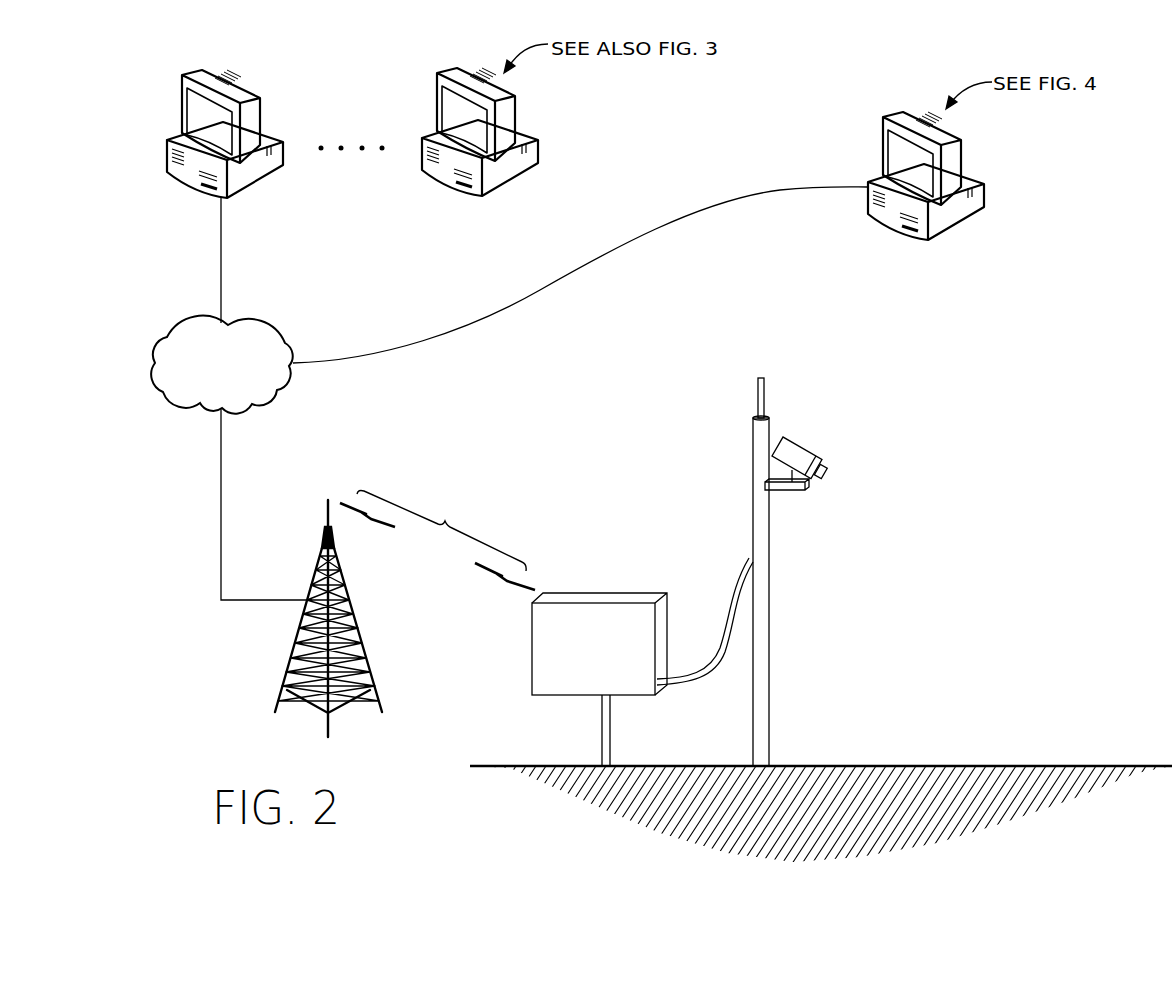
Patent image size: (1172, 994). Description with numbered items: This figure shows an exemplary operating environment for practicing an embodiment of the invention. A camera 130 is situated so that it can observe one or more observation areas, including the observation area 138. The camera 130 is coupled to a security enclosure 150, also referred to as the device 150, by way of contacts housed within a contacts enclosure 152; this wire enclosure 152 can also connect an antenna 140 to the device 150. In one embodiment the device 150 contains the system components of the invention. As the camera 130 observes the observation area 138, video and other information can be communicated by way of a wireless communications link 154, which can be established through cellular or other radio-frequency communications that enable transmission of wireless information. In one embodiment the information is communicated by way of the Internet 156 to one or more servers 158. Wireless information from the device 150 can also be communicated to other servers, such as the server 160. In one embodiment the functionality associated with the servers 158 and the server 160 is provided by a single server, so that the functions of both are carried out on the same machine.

The camera 130 is at (808, 441).
The observation area 138 is at (788, 750).
The antenna 140 is at (773, 392).
The security enclosure 150 is at (607, 659).
The contacts enclosure 152 is at (700, 682).
The wireless communications link 154 is at (437, 540).
The Internet 156 is at (255, 408).
The servers 158 is at (257, 182).
The server 160 is at (960, 224).